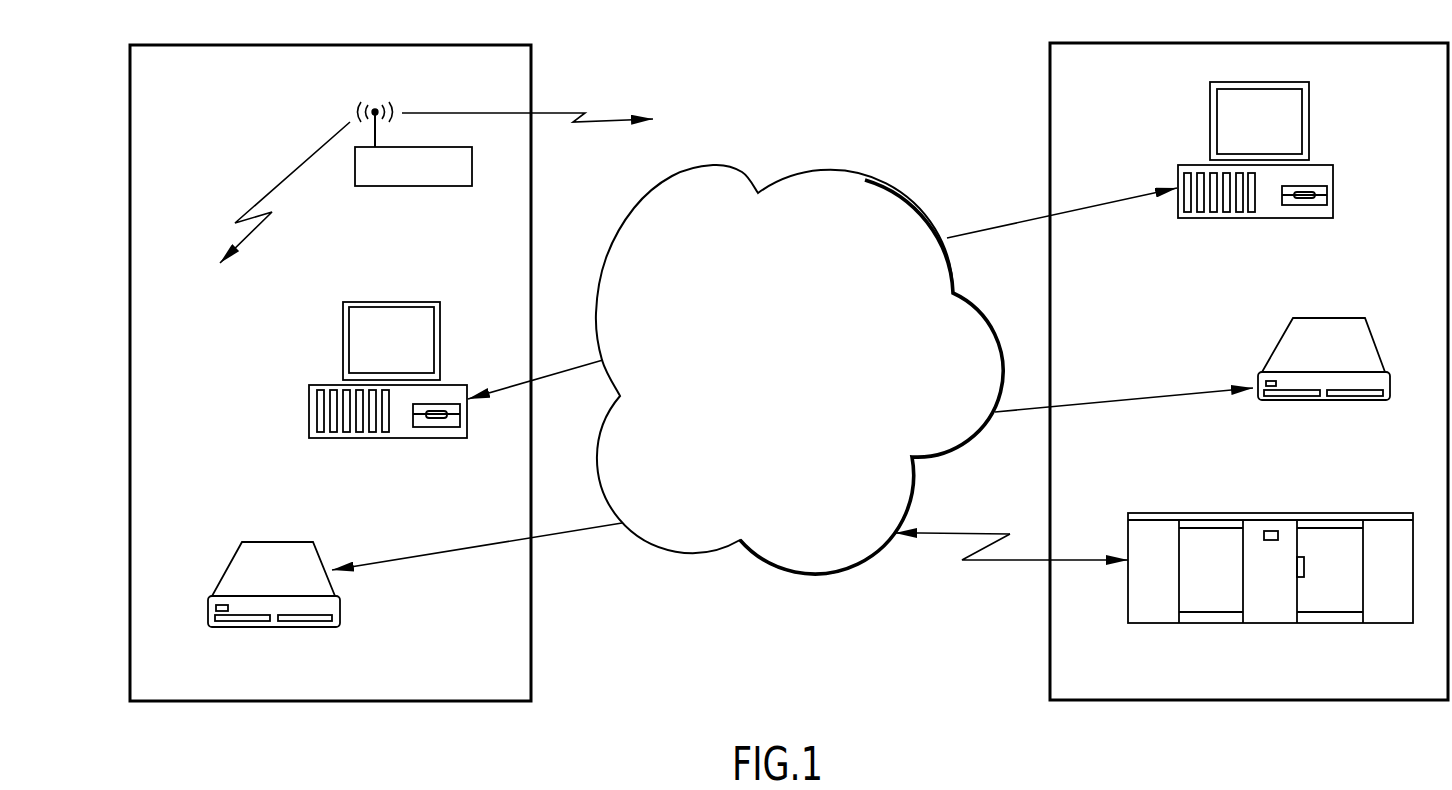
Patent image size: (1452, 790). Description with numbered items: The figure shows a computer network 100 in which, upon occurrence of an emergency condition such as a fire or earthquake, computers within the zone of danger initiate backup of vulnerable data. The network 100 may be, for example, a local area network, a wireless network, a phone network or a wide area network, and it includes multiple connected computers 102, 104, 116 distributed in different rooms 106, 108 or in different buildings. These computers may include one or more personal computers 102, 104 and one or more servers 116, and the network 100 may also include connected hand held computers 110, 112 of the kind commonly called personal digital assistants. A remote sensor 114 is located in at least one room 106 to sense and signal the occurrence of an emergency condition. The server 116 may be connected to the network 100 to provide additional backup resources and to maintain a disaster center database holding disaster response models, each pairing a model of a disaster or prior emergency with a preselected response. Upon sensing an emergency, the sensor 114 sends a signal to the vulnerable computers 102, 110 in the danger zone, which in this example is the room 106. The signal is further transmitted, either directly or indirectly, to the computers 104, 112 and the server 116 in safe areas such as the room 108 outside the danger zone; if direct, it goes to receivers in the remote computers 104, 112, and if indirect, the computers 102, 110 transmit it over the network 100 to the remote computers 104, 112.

The computer network 100 is at (731, 165).
The personal computer 102 is at (343, 330).
The personal computer 104 is at (1337, 195).
The room 106 is at (533, 668).
The room 108 is at (1050, 664).
The hand held computer 110 is at (262, 541).
The hand held computer 112 is at (1322, 338).
The remote sensor 114 is at (426, 187).
The server 116 is at (1273, 513).